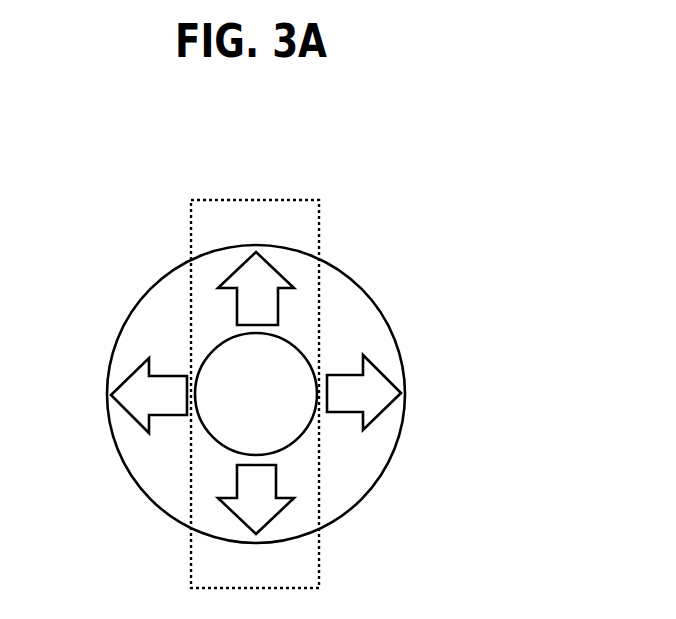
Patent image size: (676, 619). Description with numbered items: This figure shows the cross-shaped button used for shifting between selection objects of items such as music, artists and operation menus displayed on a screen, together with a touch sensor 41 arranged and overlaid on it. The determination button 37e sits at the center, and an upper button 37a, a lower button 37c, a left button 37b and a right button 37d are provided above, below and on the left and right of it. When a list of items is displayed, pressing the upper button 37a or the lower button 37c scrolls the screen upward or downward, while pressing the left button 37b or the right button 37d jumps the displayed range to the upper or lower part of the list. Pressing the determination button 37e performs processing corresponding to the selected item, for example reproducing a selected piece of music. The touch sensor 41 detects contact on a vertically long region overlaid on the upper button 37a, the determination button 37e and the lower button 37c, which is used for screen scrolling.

The touch sensor 41 is at (258, 200).
The upper button 37a is at (277, 262).
The left button 37b is at (137, 375).
The lower button 37c is at (237, 518).
The right button 37d is at (390, 358).
The determination button 37e is at (303, 437).